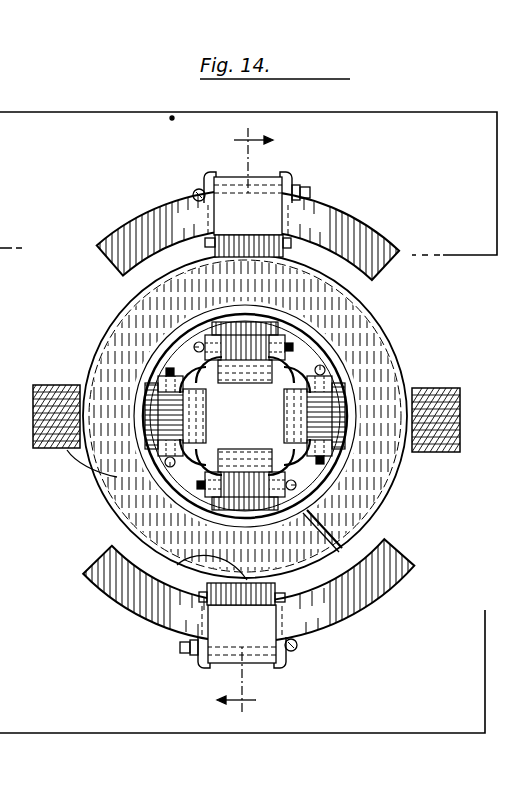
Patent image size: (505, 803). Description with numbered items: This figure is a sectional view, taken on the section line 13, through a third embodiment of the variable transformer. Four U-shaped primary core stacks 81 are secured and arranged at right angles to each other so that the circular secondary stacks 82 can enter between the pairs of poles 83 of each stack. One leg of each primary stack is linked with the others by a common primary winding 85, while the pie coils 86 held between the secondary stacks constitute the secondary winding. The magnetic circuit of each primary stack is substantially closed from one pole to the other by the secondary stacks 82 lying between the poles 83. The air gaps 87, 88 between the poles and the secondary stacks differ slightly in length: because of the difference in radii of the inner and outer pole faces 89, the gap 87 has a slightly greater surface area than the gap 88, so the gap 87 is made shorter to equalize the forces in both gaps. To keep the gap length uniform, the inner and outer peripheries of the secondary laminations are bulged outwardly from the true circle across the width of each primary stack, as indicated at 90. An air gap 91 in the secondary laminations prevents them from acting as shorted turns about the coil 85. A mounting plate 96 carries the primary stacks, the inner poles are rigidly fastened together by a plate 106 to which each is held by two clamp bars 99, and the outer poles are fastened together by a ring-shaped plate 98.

The section line 13— 13 is at (249, 422).
The U-shaped primary core stack 81 is at (45, 384).
The circular secondary stack 82 is at (131, 308).
The pole 83 is at (293, 248).
The common primary winding 85 is at (311, 358).
The pie coil 86 is at (348, 330).
The air gap 87 is at (227, 317).
The air gap 88 is at (200, 267).
The pole face 89 is at (356, 402).
The bulged periphery 90 is at (130, 413).
The air gap in secondary laminations 91 is at (342, 550).
The mounting plate 96 is at (457, 116).
The ring-shaped plate 98 is at (132, 223).
The clamp bar 99 is at (221, 173).
The plate 106 is at (245, 416).